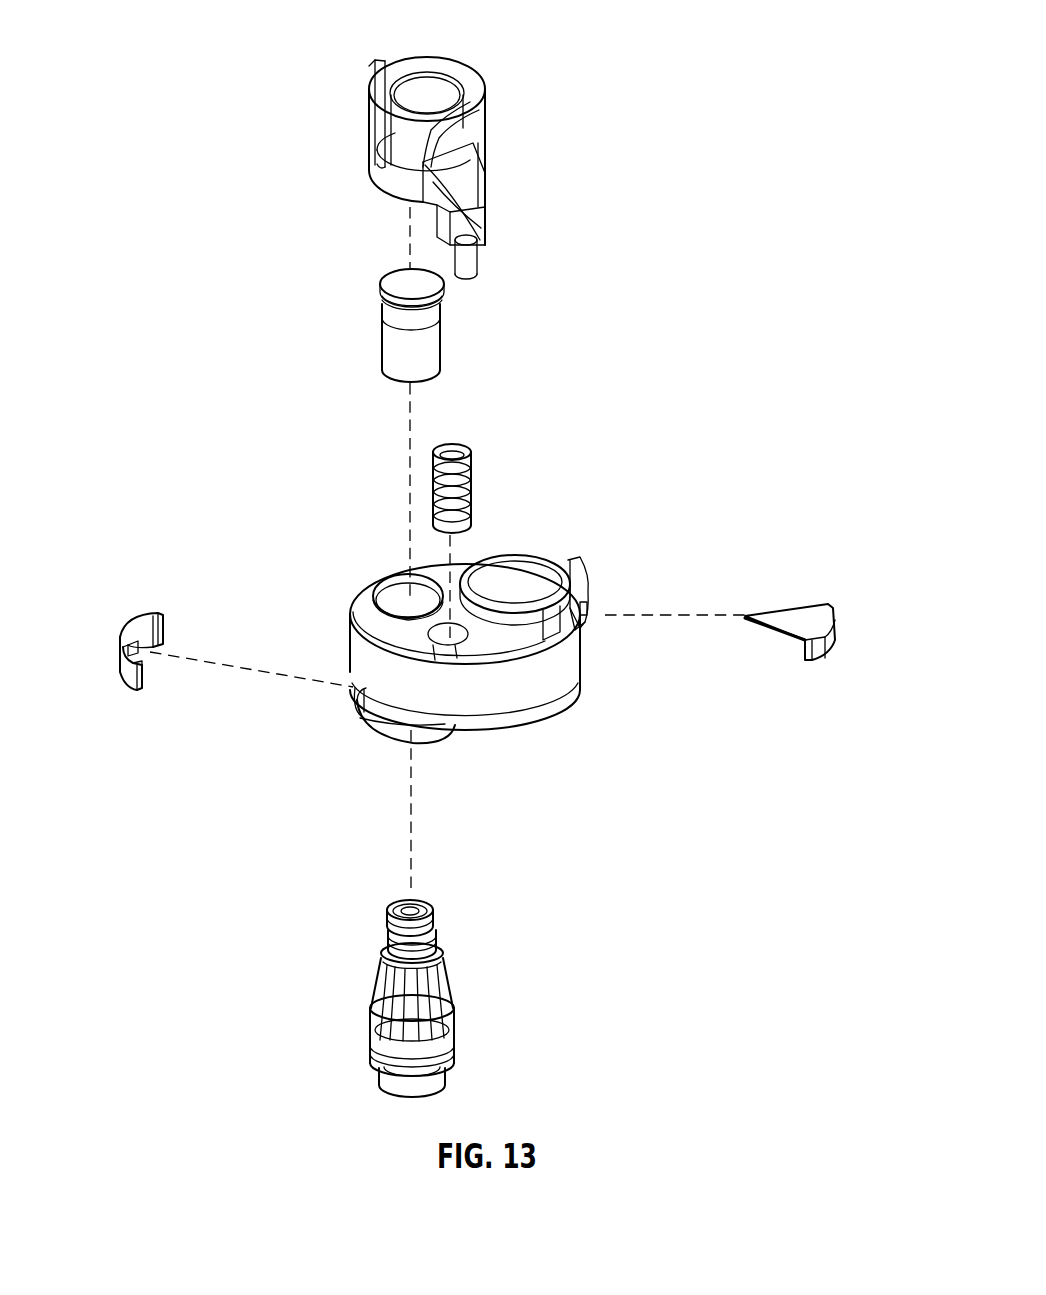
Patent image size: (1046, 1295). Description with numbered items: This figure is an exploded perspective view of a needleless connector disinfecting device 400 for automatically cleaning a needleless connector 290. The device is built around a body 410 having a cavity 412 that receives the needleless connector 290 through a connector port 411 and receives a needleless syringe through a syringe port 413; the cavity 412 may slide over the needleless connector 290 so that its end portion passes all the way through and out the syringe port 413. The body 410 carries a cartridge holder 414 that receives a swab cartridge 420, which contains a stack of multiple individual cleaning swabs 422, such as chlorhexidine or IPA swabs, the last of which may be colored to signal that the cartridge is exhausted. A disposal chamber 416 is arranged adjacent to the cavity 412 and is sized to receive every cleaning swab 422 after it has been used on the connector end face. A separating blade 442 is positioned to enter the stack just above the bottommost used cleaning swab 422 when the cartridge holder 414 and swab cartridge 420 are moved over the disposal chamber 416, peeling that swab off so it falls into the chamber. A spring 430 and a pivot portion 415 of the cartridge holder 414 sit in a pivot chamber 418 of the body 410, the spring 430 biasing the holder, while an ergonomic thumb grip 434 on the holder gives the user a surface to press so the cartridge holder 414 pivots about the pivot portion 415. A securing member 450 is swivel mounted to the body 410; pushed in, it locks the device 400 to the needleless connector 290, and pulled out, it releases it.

The needleless connector disinfecting device 400 is at (523, 49).
The cartridge holder 414 is at (470, 132).
The ergonomic thumb grip 434 is at (371, 76).
The pivot portion 415 is at (478, 262).
The cleaning swab 422 is at (380, 290).
The swab cartridge 420 is at (438, 340).
The spring 430 is at (470, 488).
The body 410 is at (553, 712).
The connector port 411 is at (380, 740).
The cavity 412 is at (400, 600).
The syringe port 413 is at (400, 576).
The disposal chamber 416 is at (530, 573).
The pivot chamber 418 is at (443, 637).
The securing member 450 is at (121, 635).
The separating blade 442 is at (810, 602).
The needleless connector 290 is at (445, 980).